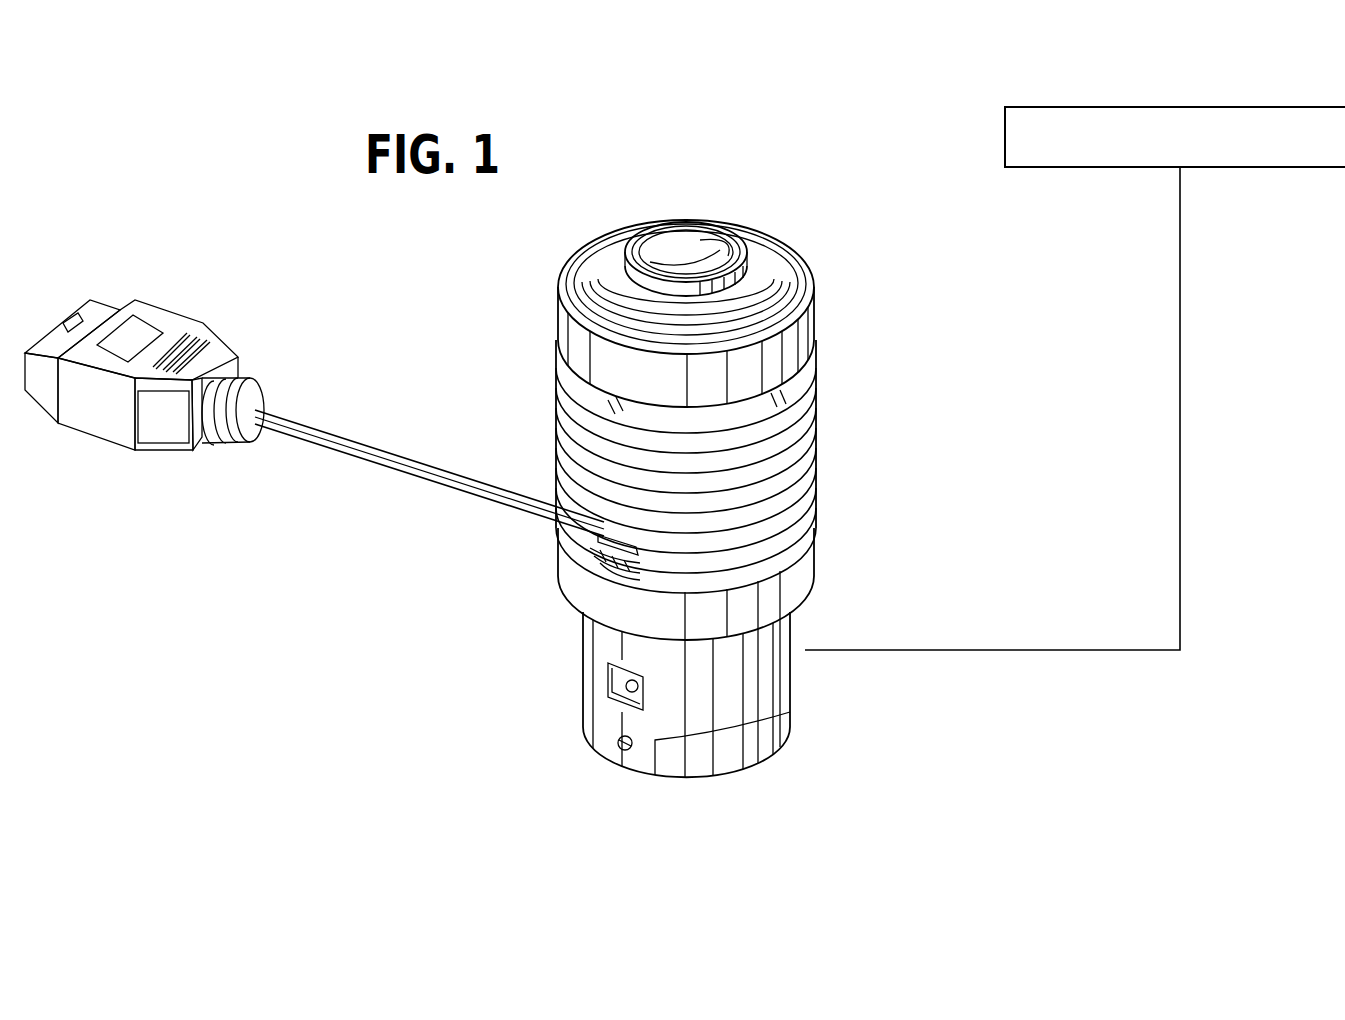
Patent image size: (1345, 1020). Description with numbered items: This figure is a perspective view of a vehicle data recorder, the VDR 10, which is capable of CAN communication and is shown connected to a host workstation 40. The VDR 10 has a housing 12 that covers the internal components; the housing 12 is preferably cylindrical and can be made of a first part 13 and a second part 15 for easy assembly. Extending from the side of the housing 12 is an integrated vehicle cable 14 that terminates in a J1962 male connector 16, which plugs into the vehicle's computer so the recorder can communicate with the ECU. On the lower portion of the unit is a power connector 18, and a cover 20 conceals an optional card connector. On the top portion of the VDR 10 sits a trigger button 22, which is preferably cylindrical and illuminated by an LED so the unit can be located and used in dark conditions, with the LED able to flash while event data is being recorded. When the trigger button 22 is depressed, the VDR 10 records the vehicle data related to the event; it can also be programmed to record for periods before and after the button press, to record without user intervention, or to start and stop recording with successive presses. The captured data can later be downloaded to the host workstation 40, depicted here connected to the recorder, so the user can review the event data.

The VDR 10 is at (722, 181).
The housing 12 is at (583, 252).
The first part 13 is at (790, 372).
The integrated vehicle cable 14 is at (403, 493).
The second part 15 is at (808, 276).
The J1962 male connector 16 is at (155, 455).
The power connector 18 is at (618, 690).
The cover 20 is at (733, 758).
The trigger button 22 is at (693, 248).
The host workstation 40 is at (1075, 168).